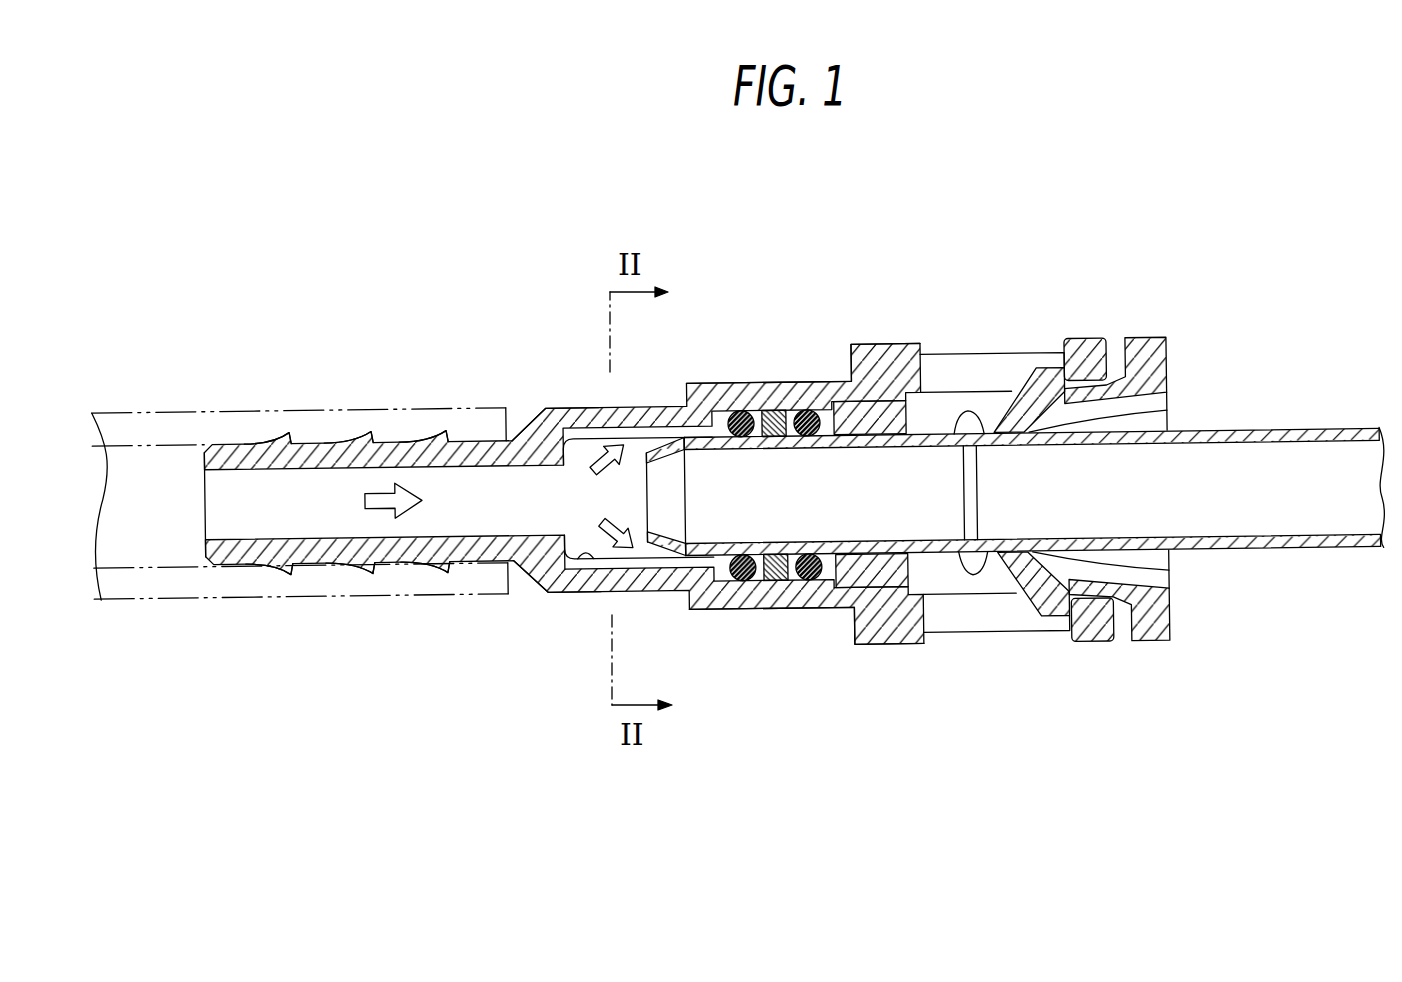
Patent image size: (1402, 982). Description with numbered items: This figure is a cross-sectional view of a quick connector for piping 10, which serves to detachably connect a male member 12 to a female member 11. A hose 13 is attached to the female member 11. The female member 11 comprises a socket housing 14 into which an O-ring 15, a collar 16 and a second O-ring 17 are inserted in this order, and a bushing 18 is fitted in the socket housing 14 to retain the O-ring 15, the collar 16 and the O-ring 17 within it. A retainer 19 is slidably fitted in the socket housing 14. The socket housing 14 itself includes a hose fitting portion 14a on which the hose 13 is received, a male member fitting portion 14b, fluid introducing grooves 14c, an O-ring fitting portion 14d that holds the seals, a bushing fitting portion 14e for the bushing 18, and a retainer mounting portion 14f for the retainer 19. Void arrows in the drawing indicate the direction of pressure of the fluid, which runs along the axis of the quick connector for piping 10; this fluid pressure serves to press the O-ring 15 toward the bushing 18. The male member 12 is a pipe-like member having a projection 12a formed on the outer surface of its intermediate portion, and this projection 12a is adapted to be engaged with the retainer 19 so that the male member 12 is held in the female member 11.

The quick connector for piping 10 is at (417, 137).
The female member 11 is at (719, 499).
The male member 12 is at (1017, 412).
The projection 12a is at (977, 405).
The hose 13 is at (163, 412).
The socket housing 14 is at (636, 520).
The hose fitting portion 14a is at (275, 445).
The male member fitting portion 14b is at (556, 592).
The fluid introducing grooves 14c is at (636, 407).
The O-ring fitting portion 14d is at (722, 608).
The bushing fitting portion 14e is at (880, 572).
The retainer mounting portion 14f is at (1057, 612).
The O-ring 15 is at (718, 410).
The collar 16 is at (775, 410).
The O-ring 17 is at (800, 410).
The bushing 18 is at (945, 356).
The retainer 19 is at (1143, 335).